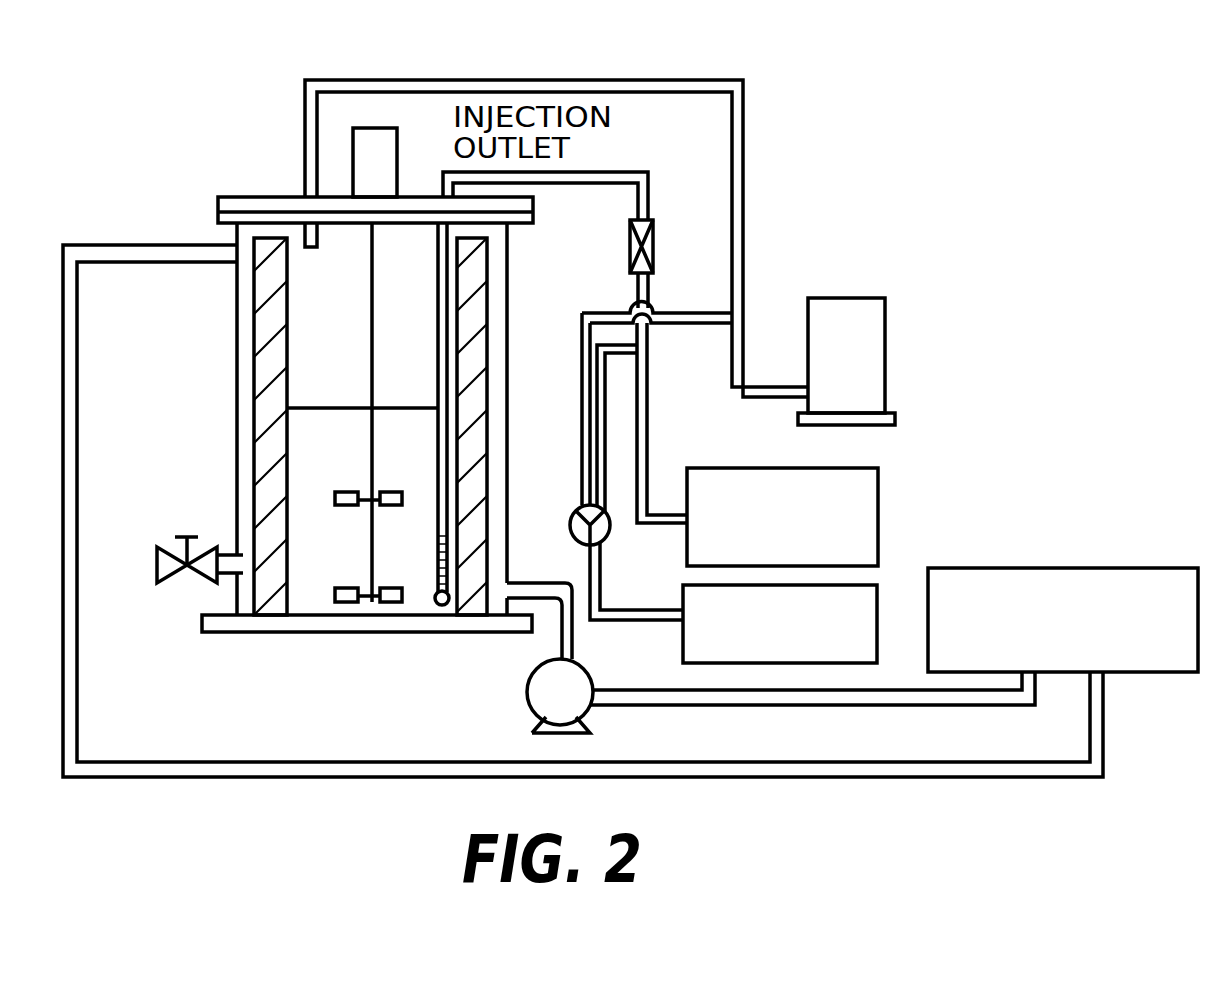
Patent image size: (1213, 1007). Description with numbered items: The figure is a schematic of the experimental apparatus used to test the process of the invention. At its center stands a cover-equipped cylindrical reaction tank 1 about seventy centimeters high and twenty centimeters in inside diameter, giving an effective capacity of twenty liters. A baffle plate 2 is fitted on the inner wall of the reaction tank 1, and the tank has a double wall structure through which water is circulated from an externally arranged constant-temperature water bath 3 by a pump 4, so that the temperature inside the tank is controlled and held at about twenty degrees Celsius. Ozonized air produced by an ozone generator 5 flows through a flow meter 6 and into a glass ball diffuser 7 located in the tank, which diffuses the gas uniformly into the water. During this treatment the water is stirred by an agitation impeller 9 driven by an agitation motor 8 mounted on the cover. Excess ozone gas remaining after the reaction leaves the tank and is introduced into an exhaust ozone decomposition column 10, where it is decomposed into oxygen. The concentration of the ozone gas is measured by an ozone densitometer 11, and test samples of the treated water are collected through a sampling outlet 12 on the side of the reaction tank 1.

The reaction tank 1 is at (258, 197).
The baffle plate 2 is at (255, 390).
The constant-temperature water bath 3 is at (1147, 568).
The pump 4 is at (585, 737).
The ozone generator 5 is at (722, 468).
The flow meter 6 is at (655, 237).
The glass ball diffuser 7 is at (437, 610).
The agitation motor 8 is at (380, 128).
The agitation impeller 9 is at (348, 592).
The exhaust ozone decomposition column 10 is at (868, 298).
The ozone densitometer 11 is at (882, 602).
The sampling outlet 12 is at (160, 583).